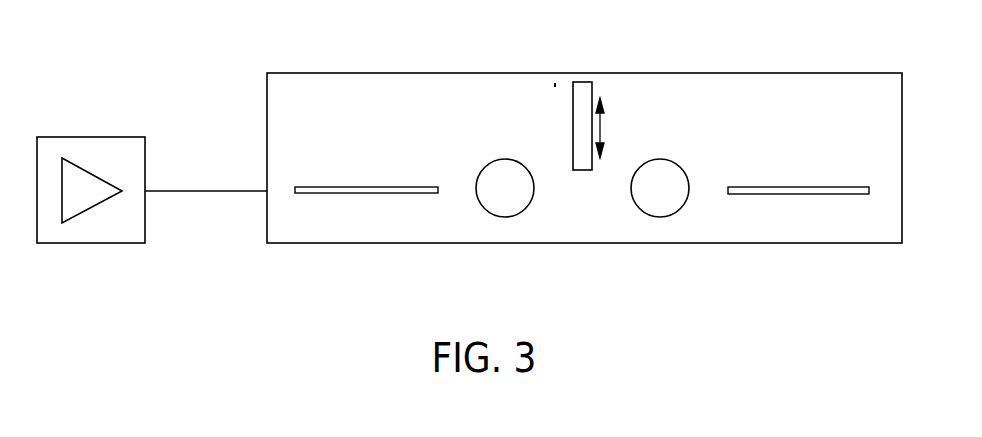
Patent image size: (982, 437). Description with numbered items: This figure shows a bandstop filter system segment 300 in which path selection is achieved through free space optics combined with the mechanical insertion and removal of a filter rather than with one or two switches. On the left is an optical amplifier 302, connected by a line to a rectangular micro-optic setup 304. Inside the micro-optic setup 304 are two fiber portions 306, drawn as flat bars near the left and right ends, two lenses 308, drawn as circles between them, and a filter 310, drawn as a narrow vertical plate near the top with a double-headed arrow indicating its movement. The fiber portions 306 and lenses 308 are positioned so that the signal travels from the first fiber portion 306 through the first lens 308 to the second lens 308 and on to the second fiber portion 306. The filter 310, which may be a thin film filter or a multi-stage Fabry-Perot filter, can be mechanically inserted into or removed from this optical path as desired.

The segment 300 is at (126, 56).
The optical amplifier 302 is at (92, 137).
The micro-optic setup 304 is at (483, 73).
The fiber portions 306 is at (370, 193).
The lenses 308 is at (505, 217).
The filter 310 is at (588, 73).